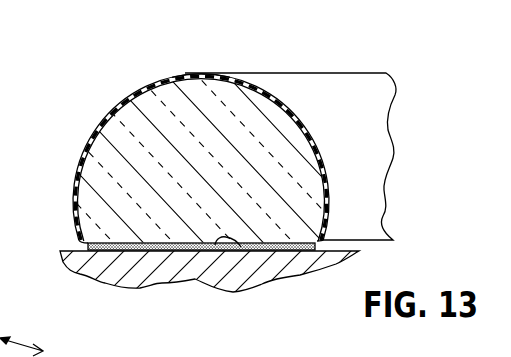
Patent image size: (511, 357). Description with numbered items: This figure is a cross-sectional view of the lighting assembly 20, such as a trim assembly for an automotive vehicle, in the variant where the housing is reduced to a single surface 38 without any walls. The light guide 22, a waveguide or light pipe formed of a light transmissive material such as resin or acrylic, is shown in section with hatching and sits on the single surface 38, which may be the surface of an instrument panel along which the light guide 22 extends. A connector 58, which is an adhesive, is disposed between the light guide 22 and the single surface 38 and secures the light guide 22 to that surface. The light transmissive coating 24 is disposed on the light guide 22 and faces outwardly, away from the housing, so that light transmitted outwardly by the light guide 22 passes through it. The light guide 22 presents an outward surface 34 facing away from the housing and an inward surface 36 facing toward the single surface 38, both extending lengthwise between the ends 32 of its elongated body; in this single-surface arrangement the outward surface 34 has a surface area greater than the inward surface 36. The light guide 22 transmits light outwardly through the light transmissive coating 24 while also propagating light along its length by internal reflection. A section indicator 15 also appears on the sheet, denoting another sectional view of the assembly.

The lighting assembly 20 is at (192, 138).
The light guide 22 is at (314, 137).
The light transmissive coating 24 is at (195, 74).
The ends 32 is at (155, 104).
The outward surface 34 is at (84, 151).
The inward surface 36 is at (241, 247).
The single surface 38 is at (341, 243).
The connector 58 is at (136, 247).
The section line 15- 15 is at (31, 330).